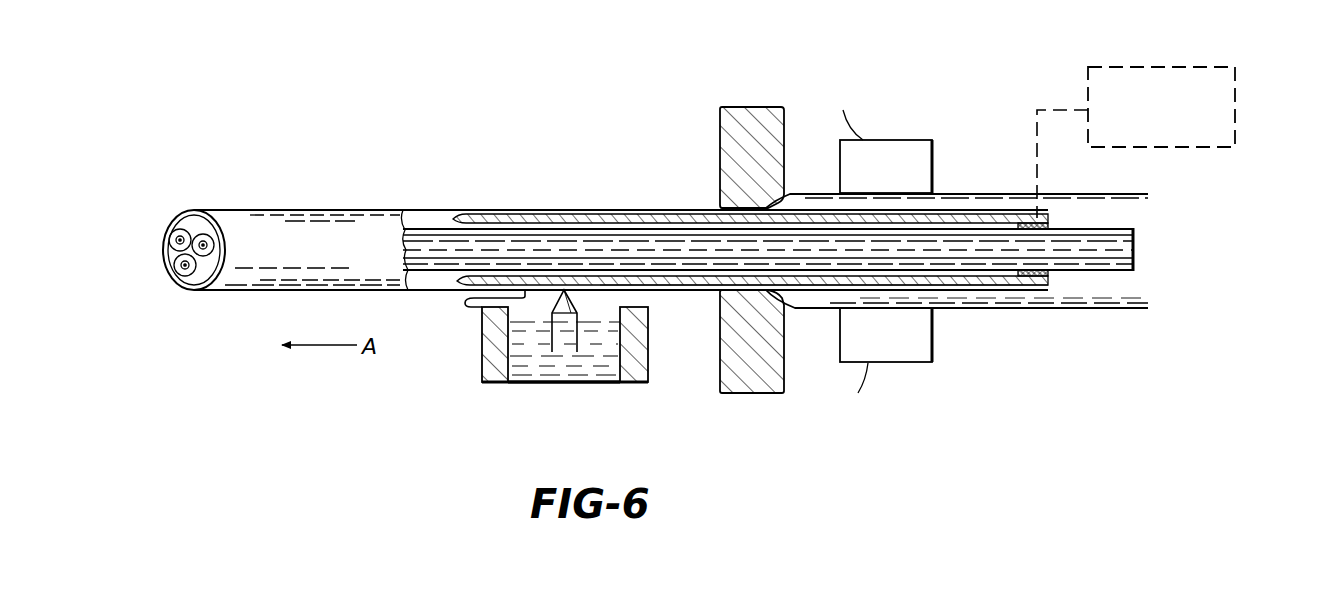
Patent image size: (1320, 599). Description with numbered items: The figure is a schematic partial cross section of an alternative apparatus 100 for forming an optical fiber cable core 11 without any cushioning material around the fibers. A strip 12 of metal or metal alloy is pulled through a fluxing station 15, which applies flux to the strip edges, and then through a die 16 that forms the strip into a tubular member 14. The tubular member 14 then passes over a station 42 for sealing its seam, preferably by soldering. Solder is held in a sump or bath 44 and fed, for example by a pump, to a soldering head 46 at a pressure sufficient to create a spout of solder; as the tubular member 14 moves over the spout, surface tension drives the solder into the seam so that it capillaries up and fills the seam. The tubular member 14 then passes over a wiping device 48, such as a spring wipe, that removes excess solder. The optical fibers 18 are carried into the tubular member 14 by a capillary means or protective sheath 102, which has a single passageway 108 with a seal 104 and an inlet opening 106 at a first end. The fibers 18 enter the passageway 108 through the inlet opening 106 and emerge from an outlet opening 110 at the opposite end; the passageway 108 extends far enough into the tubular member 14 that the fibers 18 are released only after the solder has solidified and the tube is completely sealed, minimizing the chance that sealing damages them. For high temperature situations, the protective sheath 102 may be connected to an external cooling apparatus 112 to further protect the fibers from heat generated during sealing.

The cable core 11 is at (251, 205).
The tubular member 14 is at (318, 228).
The optical fibers 18 is at (176, 270).
The outlet opening 110 is at (452, 228).
The capillary means or protective sheath 102 is at (669, 209).
The seal 104 is at (1049, 226).
The inlet opening 106 is at (1056, 278).
The passageway 108 is at (989, 279).
The apparatus 100 is at (600, 194).
The die 16 is at (758, 106).
The strip 12 is at (984, 200).
The fluxing station 15 is at (896, 187).
The cooling apparatus 112 is at (1236, 67).
The station 42 is at (570, 384).
The sump or bath 44 is at (527, 357).
The soldering head 46 is at (578, 311).
The wiping device 48 is at (469, 304).